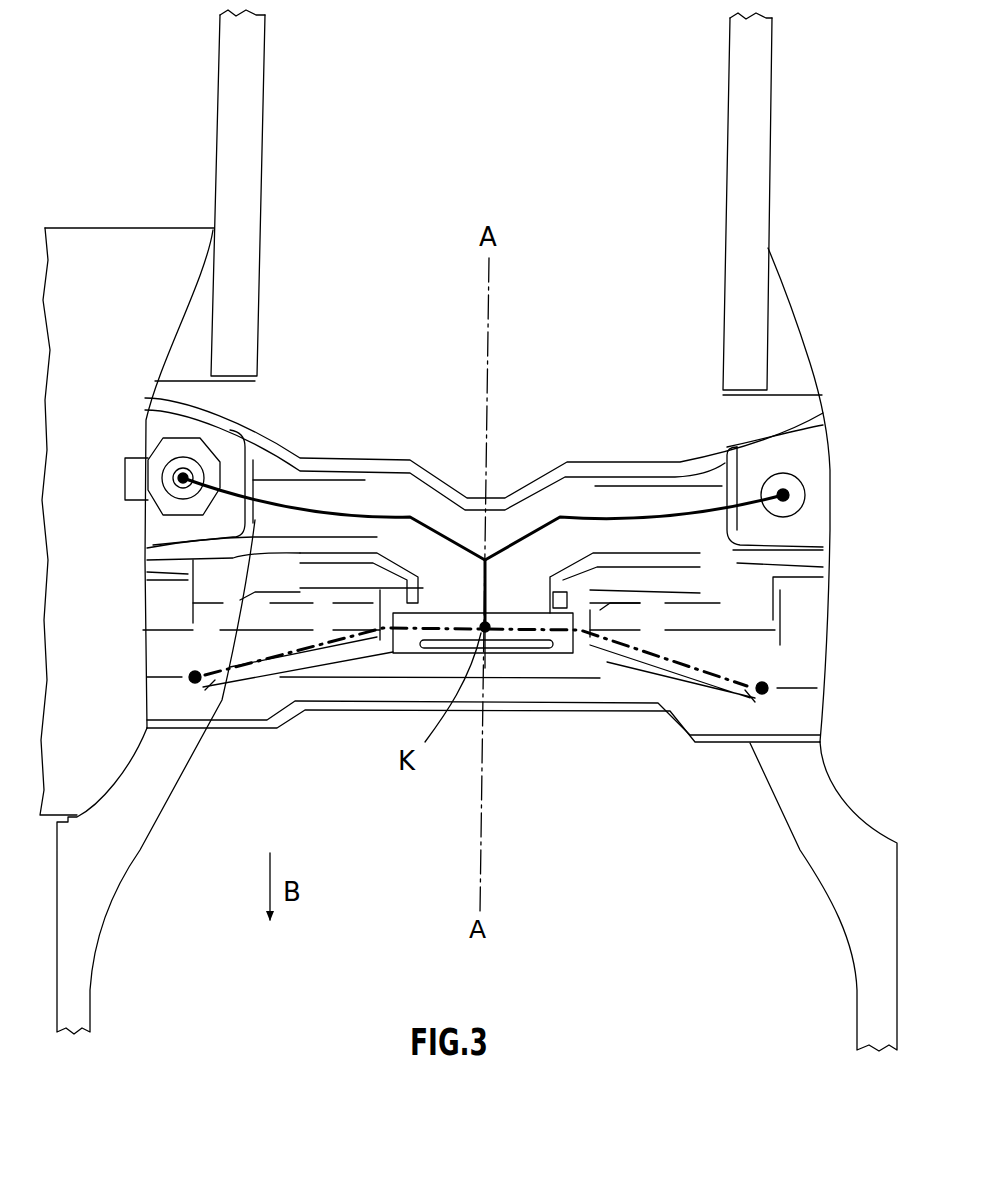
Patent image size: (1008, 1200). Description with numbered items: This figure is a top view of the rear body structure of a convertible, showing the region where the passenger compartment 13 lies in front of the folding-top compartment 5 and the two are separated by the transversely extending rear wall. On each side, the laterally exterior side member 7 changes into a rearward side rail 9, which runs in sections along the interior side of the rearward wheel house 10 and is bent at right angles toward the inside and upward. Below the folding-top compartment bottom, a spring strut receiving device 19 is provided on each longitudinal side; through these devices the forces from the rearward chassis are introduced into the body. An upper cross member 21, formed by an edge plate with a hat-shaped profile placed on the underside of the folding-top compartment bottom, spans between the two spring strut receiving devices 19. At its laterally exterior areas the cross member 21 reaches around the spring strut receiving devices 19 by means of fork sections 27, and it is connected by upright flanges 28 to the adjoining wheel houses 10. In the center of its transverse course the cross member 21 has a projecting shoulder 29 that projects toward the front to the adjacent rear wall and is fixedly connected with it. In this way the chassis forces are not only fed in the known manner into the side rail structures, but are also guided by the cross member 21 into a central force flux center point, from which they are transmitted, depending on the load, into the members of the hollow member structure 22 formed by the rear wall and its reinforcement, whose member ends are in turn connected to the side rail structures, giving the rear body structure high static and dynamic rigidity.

The folding-top compartment 5 is at (435, 521).
The side member 7 is at (78, 1006).
The rearward side rail 9 is at (243, 113).
The wheel house 10 is at (475, 561).
The passenger compartment 13 is at (600, 886).
The spring strut receiving device 19 is at (201, 430).
The upper cross member 21 is at (432, 497).
The hollow member structure 22 is at (600, 676).
The fork section 27 is at (183, 417).
The upright flange 28 is at (141, 398).
The projecting shoulder 29 is at (588, 592).